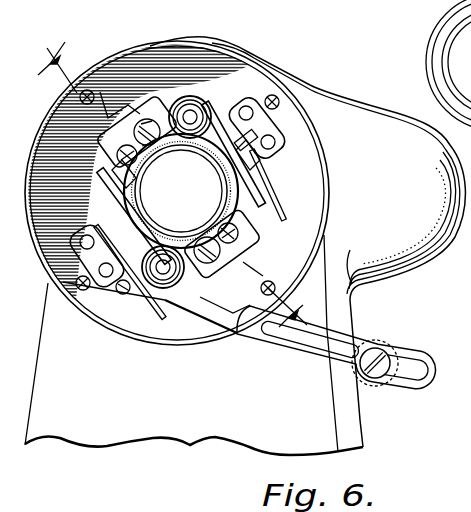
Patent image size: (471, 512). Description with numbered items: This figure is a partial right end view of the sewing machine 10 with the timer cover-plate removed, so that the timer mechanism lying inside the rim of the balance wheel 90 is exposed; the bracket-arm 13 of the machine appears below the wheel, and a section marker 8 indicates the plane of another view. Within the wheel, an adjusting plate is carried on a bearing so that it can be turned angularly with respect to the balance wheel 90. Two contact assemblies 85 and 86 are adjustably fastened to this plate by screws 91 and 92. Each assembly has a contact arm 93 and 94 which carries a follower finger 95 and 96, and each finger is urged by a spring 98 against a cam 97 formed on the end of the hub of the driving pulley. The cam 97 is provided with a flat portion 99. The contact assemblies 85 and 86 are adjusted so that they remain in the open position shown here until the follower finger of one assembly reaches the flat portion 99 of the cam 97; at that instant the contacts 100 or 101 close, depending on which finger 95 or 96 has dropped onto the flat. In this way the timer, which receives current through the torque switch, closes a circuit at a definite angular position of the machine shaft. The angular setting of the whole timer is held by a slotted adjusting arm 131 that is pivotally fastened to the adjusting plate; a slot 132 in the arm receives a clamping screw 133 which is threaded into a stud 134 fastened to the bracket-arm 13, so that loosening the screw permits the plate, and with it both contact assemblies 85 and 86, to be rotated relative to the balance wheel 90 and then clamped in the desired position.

The section line 8- 8 is at (177, 179).
The sewing machine 10 is at (331, 83).
The bracket-arm 13 is at (153, 440).
The contact assembly 85 is at (258, 132).
The contact assembly 86 is at (100, 258).
The balance wheel 90 is at (240, 48).
The screw 91 is at (149, 119).
The screw 92 is at (124, 140).
The contact arm 93 is at (241, 179).
The contact arm 94 is at (110, 195).
The follower finger 95 is at (284, 207).
The follower finger 96 is at (130, 204).
The cam 97 is at (184, 219).
The spring 98 is at (193, 96).
The flat portion 99 is at (176, 159).
The contacts 100 is at (250, 236).
The contacts 101 is at (110, 170).
The slotted adjusting arm 131 is at (264, 342).
The slot 132 is at (310, 350).
The clamping screw 133 is at (373, 387).
The stud 134 is at (386, 342).